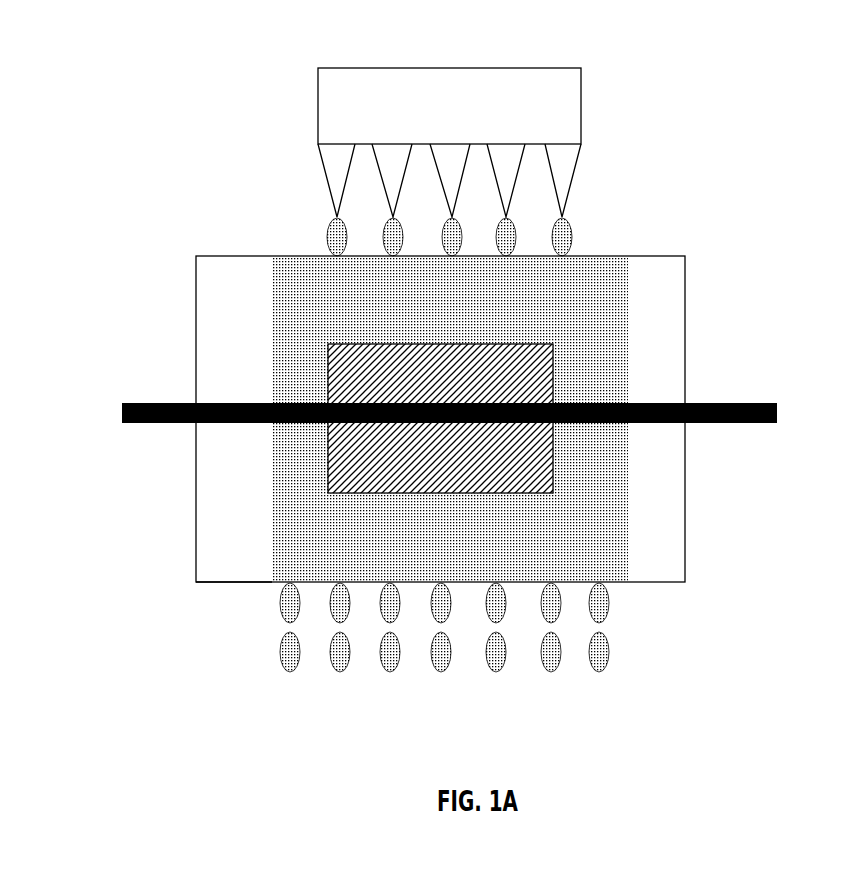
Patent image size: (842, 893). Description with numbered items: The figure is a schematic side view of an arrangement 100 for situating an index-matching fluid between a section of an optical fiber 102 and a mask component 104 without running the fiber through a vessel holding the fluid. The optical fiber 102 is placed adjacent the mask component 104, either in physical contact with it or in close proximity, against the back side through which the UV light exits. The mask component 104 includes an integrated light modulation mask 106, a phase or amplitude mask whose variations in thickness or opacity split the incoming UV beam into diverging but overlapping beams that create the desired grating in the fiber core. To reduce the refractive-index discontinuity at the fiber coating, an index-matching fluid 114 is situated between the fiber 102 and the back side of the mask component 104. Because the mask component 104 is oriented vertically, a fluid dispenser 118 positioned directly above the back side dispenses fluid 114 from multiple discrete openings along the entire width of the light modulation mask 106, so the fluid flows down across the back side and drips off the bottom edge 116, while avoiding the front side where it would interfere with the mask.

The arrangement 100 is at (733, 50).
The optical fiber 102 is at (712, 401).
The mask component 104 is at (684, 305).
The light modulation mask 106 is at (553, 370).
The index-matching fluid 114 is at (573, 238).
The bottom edge 116 is at (224, 582).
The fluid dispenser 118 is at (451, 68).